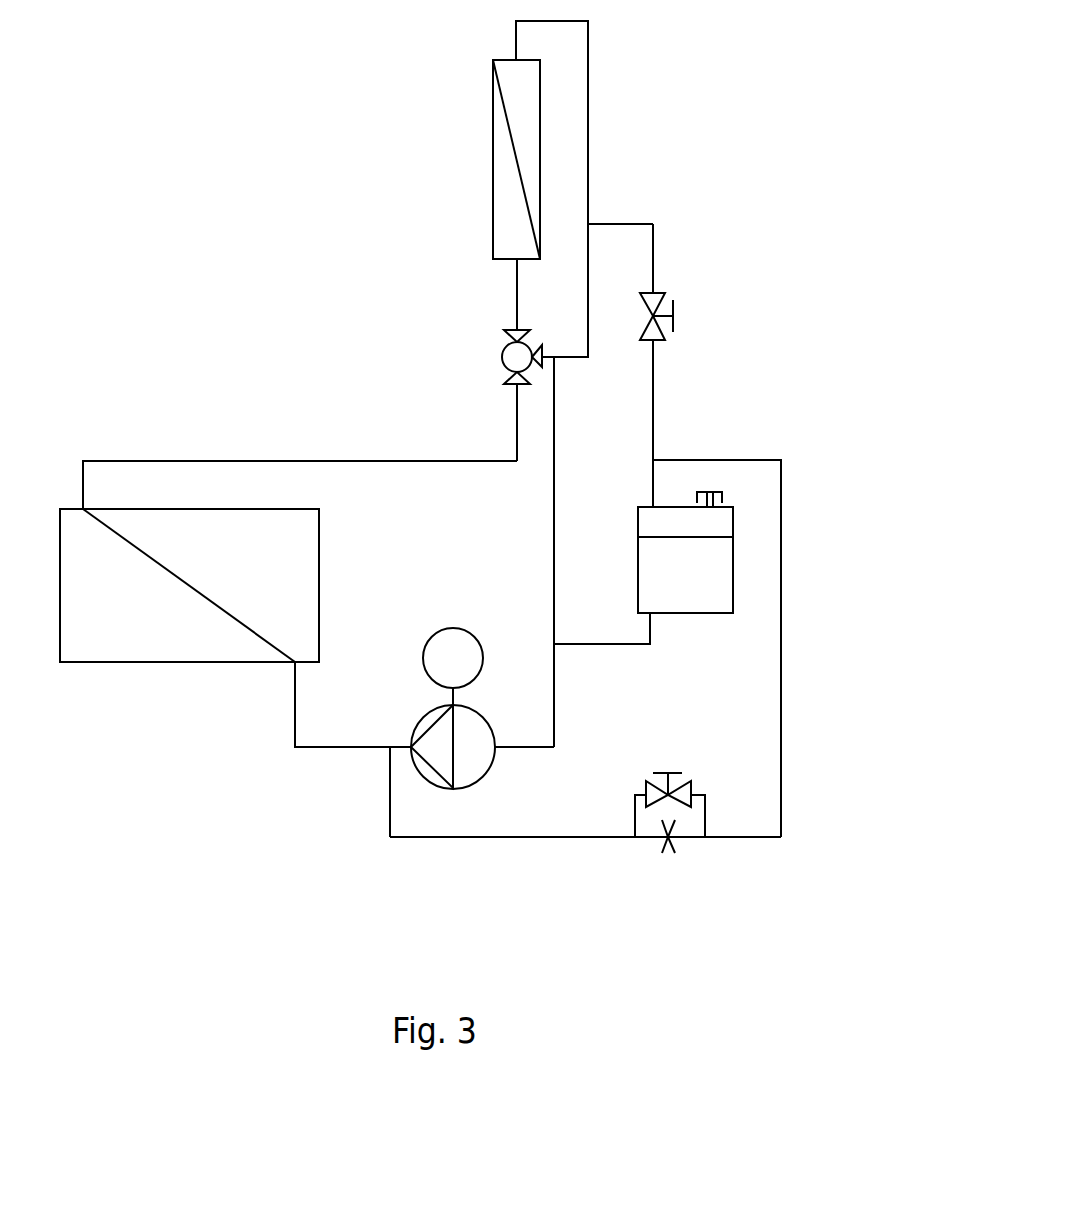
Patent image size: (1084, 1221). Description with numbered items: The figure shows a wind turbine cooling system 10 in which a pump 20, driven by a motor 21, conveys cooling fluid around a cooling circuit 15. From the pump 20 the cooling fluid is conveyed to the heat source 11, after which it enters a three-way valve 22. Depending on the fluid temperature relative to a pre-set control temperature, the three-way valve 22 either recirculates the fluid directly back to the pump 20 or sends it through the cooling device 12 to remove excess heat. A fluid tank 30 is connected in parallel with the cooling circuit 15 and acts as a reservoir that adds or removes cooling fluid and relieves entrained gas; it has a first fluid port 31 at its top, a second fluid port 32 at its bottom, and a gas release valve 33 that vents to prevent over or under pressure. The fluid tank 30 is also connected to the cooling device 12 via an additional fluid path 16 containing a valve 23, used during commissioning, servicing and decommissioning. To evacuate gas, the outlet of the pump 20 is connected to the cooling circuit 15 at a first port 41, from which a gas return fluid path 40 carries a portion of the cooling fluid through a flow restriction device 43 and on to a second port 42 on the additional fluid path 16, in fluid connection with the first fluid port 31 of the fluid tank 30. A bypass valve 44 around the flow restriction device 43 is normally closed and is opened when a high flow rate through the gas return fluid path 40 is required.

The cooling system 10 is at (318, 177).
The heat source 11 is at (117, 645).
The cooling device 12 is at (508, 215).
The cooling circuit 15 is at (302, 465).
The additional fluid path 16 is at (633, 223).
The pump 20 is at (473, 768).
The motor 21 is at (432, 655).
The three-way valve 22 is at (503, 350).
The valve 23 is at (660, 300).
The fluid tank 30 is at (713, 575).
The first fluid port 31 is at (653, 507).
The second fluid port 32 is at (650, 615).
The gas release valve 33 is at (720, 493).
The gas return fluid path 40 is at (593, 838).
The first port 41 is at (390, 748).
The second port 42 is at (653, 460).
The flow restriction device 43 is at (671, 839).
The bypass valve 44 is at (677, 787).